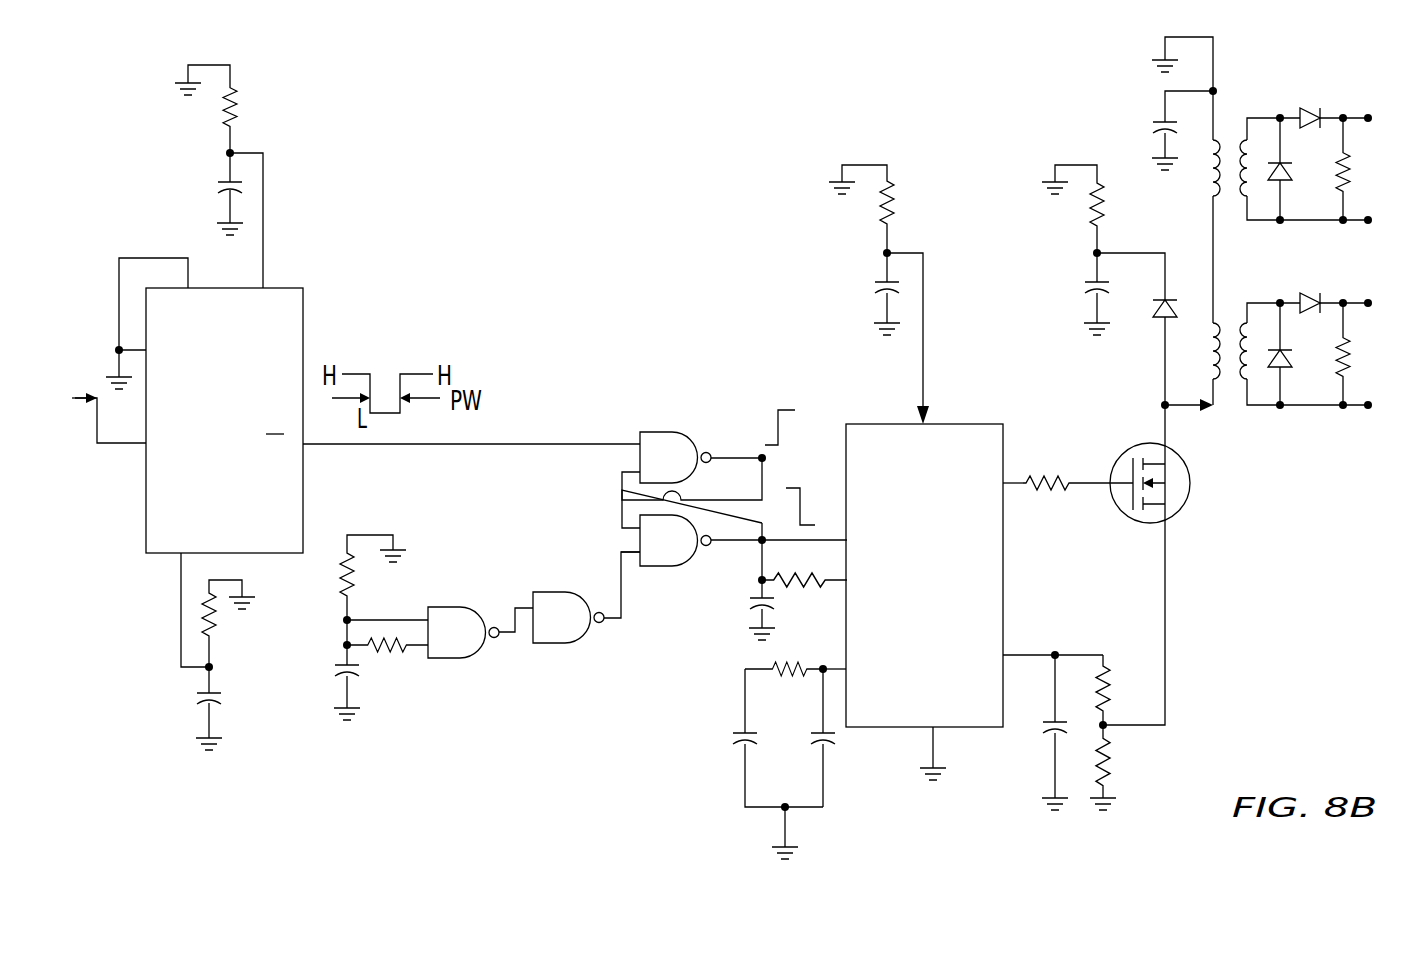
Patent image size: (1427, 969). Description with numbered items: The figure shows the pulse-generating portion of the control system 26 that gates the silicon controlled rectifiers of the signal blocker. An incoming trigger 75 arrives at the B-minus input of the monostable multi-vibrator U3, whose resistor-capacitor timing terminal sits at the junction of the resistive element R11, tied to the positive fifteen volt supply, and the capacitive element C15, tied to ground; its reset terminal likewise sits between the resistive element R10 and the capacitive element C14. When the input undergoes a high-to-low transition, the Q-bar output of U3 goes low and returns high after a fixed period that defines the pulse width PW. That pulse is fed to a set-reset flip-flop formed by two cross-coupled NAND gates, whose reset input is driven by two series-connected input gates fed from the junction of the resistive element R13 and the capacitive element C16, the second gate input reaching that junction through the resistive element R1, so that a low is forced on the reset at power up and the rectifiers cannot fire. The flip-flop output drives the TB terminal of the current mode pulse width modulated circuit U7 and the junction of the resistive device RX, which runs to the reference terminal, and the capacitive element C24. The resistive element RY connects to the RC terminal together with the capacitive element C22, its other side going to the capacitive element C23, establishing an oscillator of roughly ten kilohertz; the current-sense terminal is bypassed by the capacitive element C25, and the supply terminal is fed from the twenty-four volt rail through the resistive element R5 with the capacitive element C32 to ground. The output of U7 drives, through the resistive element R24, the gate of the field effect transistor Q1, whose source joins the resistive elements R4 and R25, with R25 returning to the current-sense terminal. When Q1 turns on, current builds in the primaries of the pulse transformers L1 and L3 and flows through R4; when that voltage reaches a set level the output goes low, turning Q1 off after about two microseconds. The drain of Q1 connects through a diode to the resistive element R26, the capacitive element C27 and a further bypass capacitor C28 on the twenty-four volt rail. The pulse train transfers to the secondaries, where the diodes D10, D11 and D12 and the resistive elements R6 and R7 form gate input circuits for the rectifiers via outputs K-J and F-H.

The control system 26 is at (540, 826).
The input trigger signal 75 is at (81, 417).
The monostable multi-vibrator circuit U3 is at (303, 320).
The resistive element R11 is at (225, 110).
The capacitive element C15 is at (220, 186).
The resistive element R10 is at (218, 625).
The capacitive element C14 is at (225, 700).
The resistive element R13 is at (355, 585).
The resistive element R1 is at (380, 660).
The capacitive element C16 is at (365, 692).
The resistive device RX is at (800, 588).
The capacitive element C24 is at (752, 605).
The resistive element R5 is at (880, 210).
The capacitive element C32 is at (875, 288).
The current mode pulse width modulated circuit U7 is at (963, 516).
The resistive element RY is at (782, 680).
The capacitive element C23 is at (740, 738).
The capacitive element C22 is at (835, 738).
The resistive element R24 is at (1050, 478).
The field effect transistor Q1 is at (1116, 510).
The resistive element R25 is at (1110, 688).
The resistive element R4 is at (1112, 758).
The capacitive element C25 is at (1045, 730).
The resistive element R26 is at (1092, 210).
The capacitive element C27 is at (1085, 290).
The supply bypass capacitor C28 is at (1158, 130).
The pulse transformer L3 is at (1243, 140).
The diode D11 is at (1313, 110).
The resistive element R7 is at (1352, 170).
The pulse transformer L1 is at (1243, 325).
The diode D10 is at (1290, 363).
The diode D12 is at (1314, 296).
The resistive element R6 is at (1352, 350).